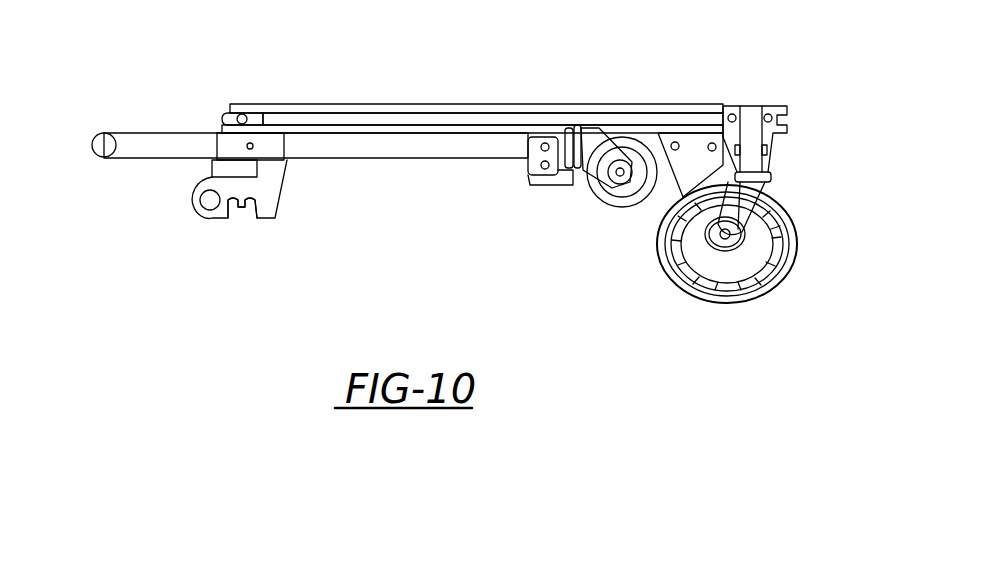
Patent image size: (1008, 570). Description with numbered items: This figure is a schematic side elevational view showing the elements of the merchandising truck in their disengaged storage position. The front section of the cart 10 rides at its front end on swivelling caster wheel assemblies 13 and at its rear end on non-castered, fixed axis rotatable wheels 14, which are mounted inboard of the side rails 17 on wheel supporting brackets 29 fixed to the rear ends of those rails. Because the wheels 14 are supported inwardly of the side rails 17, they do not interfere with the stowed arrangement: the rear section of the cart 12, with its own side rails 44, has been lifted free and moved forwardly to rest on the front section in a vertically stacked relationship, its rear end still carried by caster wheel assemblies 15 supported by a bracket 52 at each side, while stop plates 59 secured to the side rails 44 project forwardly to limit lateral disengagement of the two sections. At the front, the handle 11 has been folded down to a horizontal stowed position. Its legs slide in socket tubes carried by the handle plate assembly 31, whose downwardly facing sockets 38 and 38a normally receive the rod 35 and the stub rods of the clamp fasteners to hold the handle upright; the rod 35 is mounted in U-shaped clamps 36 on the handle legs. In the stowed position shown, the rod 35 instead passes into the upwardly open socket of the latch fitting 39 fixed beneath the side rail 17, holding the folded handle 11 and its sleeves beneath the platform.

The front section of the cart 10 is at (420, 220).
The handle 11 is at (105, 157).
The rear section of the cart 12 is at (416, 105).
The caster wheel assemblies 13 is at (608, 220).
The fixed axis rotatable wheels 14 is at (671, 281).
The caster wheel assemblies 15 is at (762, 230).
The side rails 17 is at (553, 124).
The wheel supporting brackets 29 is at (687, 140).
The handle plate assembly 31 is at (283, 196).
The rod 35 is at (550, 174).
The U-shaped clamp 36 is at (529, 162).
The socket 38 is at (232, 222).
The socket 38a is at (247, 222).
The latch fitting 39 is at (544, 169).
The side rails 44 is at (510, 107).
The bracket 52 is at (728, 104).
The stop plate 59 is at (219, 118).